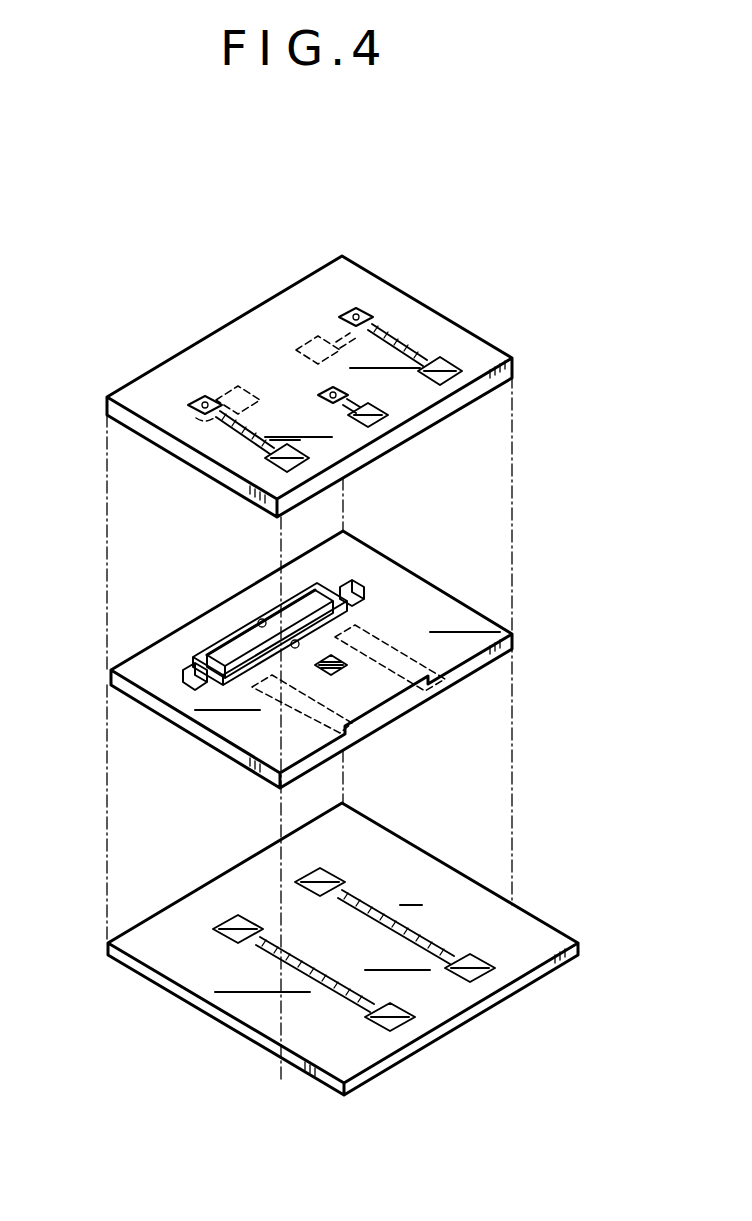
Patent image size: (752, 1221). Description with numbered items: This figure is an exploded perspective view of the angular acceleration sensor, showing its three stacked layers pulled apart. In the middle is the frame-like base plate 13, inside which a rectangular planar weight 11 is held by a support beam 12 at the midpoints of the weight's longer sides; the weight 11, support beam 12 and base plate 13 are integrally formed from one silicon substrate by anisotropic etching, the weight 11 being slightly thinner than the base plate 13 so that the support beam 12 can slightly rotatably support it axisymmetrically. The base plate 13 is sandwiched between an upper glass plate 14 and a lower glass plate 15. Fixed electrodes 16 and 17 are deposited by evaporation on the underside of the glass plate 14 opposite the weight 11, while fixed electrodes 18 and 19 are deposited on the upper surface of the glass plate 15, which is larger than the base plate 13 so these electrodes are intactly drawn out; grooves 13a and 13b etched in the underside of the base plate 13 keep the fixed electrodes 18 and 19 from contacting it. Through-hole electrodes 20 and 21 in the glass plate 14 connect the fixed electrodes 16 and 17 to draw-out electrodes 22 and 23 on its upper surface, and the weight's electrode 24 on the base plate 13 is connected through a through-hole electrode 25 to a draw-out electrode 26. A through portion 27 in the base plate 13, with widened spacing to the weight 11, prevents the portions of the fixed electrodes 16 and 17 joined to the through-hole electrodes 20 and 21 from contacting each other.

The weight 11 is at (237, 662).
The support beam 12 is at (260, 620).
The base plate 13 is at (487, 632).
The groove 13a is at (448, 688).
The groove 13b is at (355, 745).
The glass plate 14 is at (432, 325).
The glass plate 15 is at (540, 935).
The fixed electrode 16 is at (310, 336).
The fixed electrode 17 is at (226, 393).
The fixed electrode 18 is at (325, 878).
The fixed electrode 19 is at (232, 925).
The through-hole electrode 20 is at (360, 310).
The through-hole electrode 21 is at (200, 400).
The draw-out electrode 22 is at (465, 368).
The draw-out electrode 23 is at (300, 457).
The electrode 24 is at (344, 668).
The through-hole electrode 25 is at (330, 390).
The draw-out electrode 26 is at (378, 422).
The through portion 27 is at (365, 595).